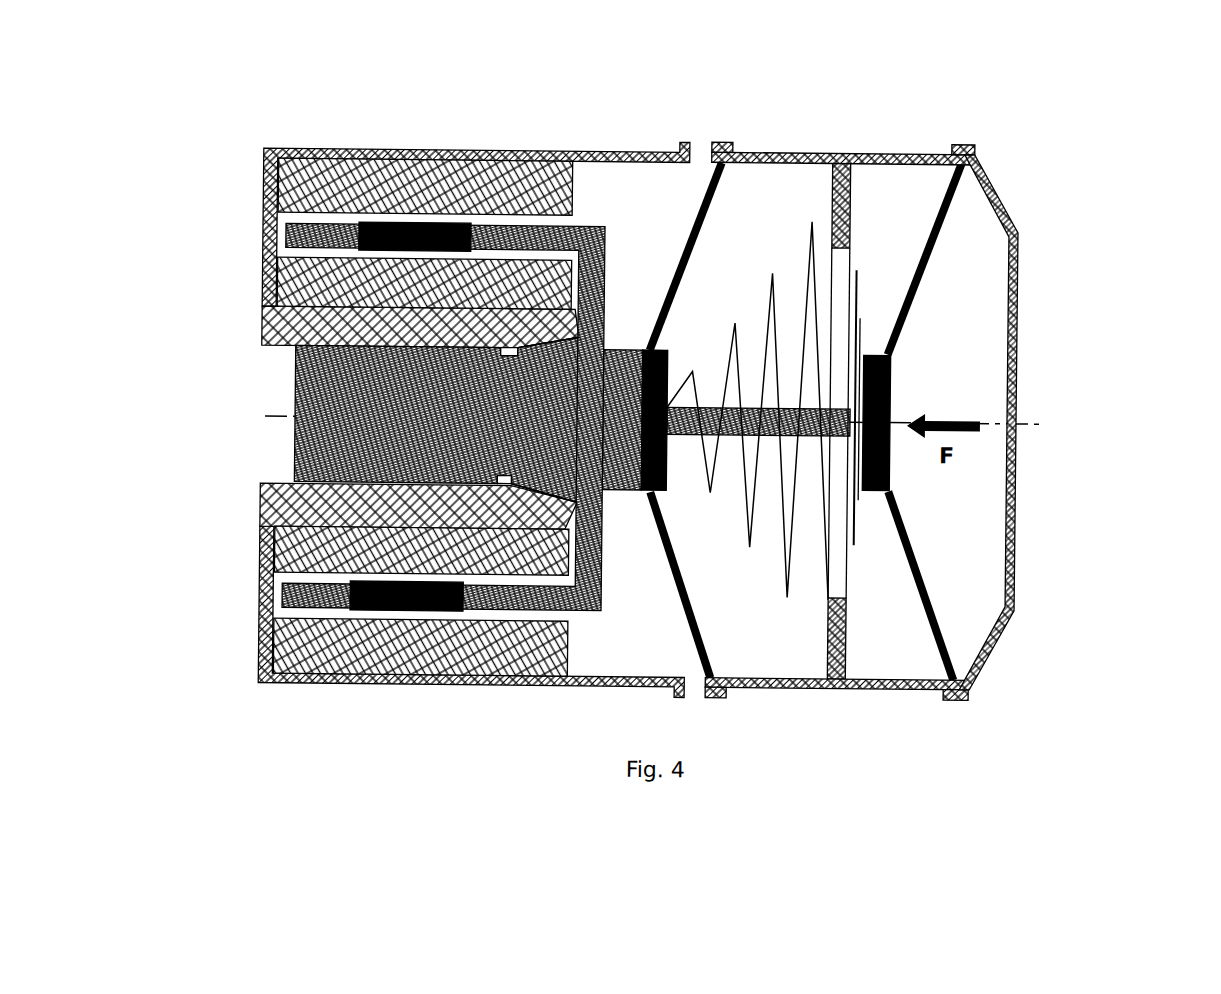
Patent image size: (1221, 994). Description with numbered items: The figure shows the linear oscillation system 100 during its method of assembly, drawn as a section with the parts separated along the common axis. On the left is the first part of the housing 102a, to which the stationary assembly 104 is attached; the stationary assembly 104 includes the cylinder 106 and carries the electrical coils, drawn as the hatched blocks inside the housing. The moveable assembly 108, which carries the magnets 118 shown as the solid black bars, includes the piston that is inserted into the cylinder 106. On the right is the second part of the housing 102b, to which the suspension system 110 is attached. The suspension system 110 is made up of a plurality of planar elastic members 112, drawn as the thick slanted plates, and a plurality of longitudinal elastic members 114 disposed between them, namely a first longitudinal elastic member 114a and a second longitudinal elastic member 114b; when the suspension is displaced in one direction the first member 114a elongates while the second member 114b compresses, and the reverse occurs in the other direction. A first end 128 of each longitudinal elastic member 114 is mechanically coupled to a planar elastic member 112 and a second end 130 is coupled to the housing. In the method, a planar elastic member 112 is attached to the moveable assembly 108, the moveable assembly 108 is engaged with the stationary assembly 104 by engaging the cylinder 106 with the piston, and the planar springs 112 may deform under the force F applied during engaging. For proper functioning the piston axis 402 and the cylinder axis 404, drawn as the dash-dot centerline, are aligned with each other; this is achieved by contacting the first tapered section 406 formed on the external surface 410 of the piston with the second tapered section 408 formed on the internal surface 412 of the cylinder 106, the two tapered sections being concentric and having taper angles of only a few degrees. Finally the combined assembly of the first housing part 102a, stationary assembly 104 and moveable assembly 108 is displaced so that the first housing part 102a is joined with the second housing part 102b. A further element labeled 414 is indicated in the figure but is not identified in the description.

The linear oscillation system 100 is at (1107, 123).
The first part of the housing 102a is at (265, 155).
The second part of the housing 102b is at (909, 150).
The stationary assembly 104 is at (266, 281).
The cylinder 106 is at (264, 341).
The moveable assembly 108 is at (596, 231).
The suspension system 110 is at (925, 580).
The planar elastic members 112 is at (700, 225).
The longitudinal elastic members 114 is at (732, 635).
The first longitudinal elastic member 114a is at (788, 576).
The second longitudinal elastic member 114b is at (854, 535).
The magnet 118 is at (386, 226).
The first end 128 is at (674, 350).
The second end 130 is at (810, 231).
The piston axis 402 is at (272, 418).
The cylinder axis 404 is at (726, 421).
The first tapered section 406 is at (558, 508).
The second tapered section 408 is at (560, 329).
The external surface 410 is at (521, 498).
The internal surface 412 is at (522, 341).
The flux path 414 is at (561, 504).